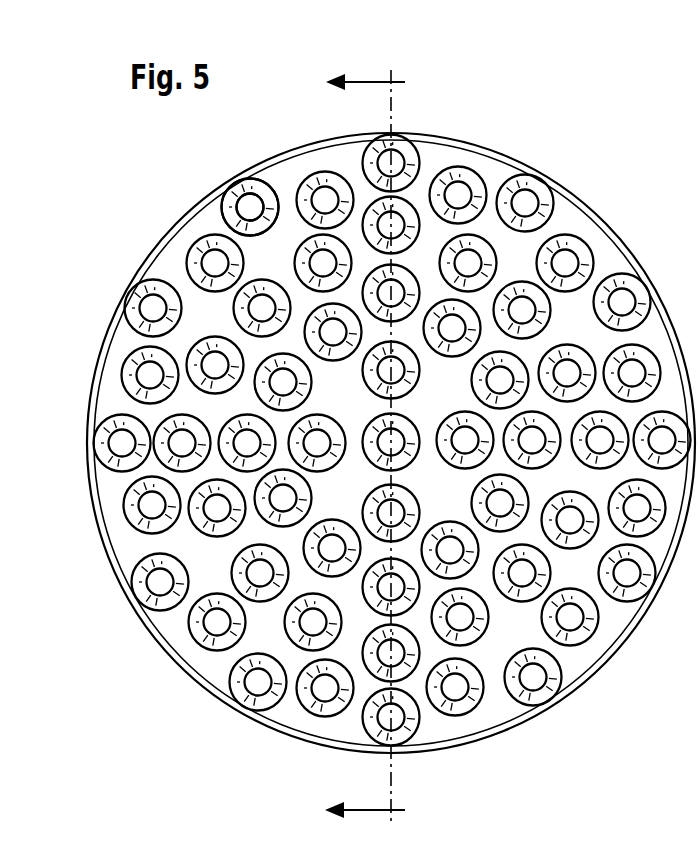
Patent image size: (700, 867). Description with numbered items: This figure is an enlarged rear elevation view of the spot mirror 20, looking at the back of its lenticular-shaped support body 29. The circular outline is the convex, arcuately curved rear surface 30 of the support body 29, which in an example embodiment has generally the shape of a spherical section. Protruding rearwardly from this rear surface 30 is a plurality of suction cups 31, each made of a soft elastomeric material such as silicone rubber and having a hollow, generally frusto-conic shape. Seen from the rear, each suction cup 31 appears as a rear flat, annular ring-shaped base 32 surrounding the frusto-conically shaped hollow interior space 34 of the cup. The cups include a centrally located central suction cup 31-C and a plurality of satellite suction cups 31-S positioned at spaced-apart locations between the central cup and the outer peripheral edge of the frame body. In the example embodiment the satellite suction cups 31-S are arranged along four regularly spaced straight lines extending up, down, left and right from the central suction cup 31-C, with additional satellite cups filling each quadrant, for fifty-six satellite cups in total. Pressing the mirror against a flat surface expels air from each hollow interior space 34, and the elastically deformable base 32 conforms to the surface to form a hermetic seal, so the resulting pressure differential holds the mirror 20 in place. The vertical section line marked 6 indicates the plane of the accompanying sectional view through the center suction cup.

The spot mirror 20 is at (533, 135).
The support body 29 is at (560, 217).
The rear surface 30 is at (573, 305).
The suction cup 31 is at (696, 281).
The satellite suction cup 31-S is at (227, 211).
The central suction cup 31-C is at (373, 463).
The annular ring-shaped base 32 is at (243, 181).
The hollow interior space 34 is at (253, 200).
The section line 6- 6 is at (376, 449).